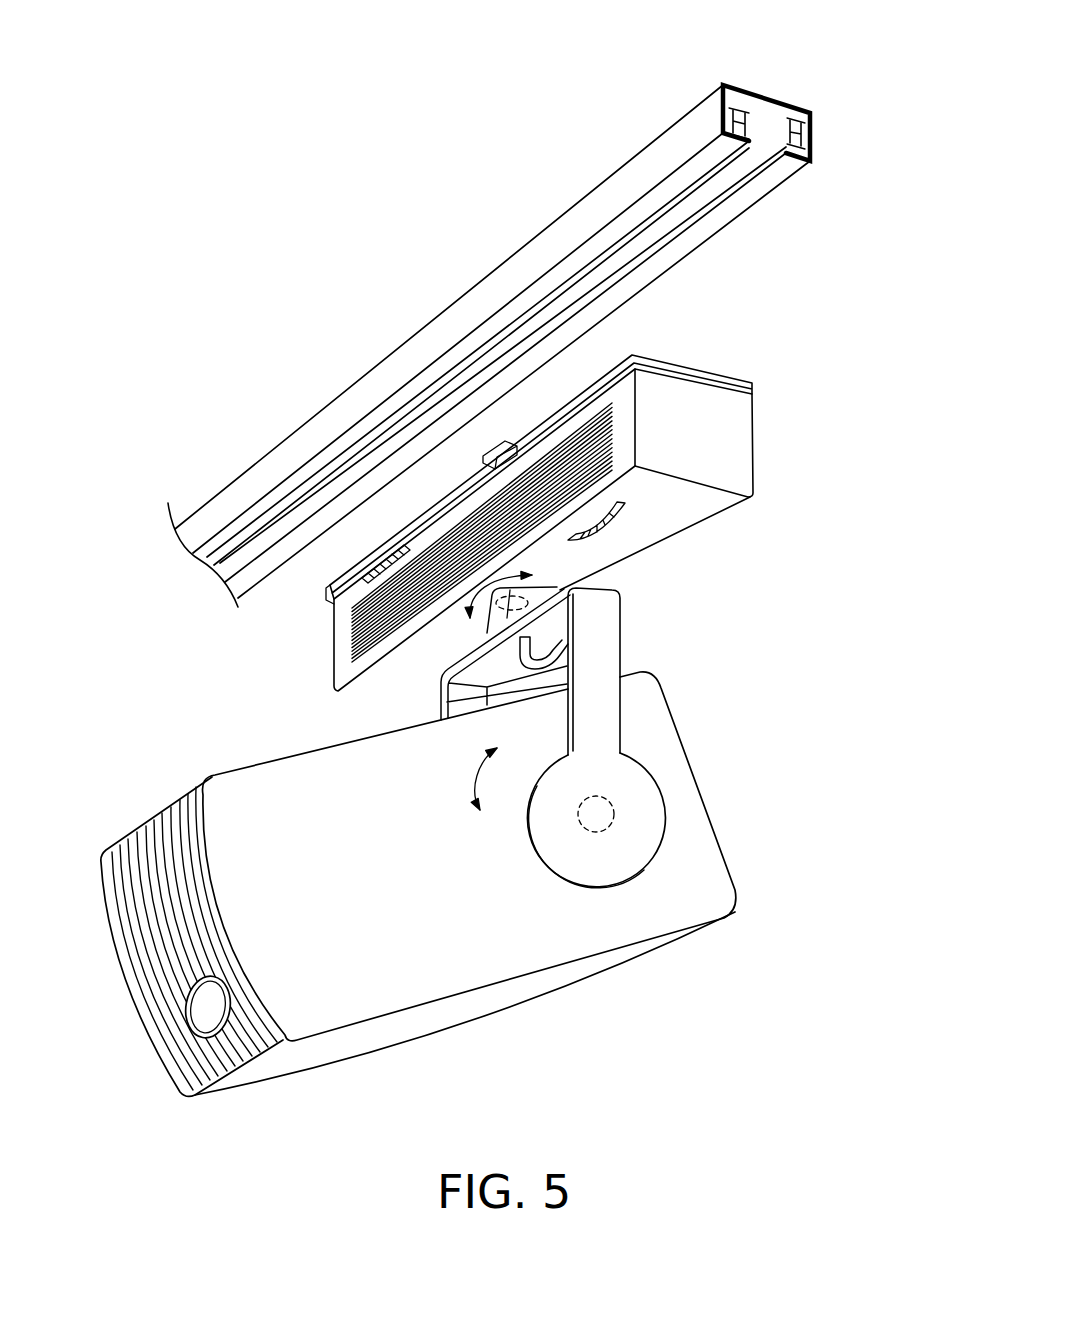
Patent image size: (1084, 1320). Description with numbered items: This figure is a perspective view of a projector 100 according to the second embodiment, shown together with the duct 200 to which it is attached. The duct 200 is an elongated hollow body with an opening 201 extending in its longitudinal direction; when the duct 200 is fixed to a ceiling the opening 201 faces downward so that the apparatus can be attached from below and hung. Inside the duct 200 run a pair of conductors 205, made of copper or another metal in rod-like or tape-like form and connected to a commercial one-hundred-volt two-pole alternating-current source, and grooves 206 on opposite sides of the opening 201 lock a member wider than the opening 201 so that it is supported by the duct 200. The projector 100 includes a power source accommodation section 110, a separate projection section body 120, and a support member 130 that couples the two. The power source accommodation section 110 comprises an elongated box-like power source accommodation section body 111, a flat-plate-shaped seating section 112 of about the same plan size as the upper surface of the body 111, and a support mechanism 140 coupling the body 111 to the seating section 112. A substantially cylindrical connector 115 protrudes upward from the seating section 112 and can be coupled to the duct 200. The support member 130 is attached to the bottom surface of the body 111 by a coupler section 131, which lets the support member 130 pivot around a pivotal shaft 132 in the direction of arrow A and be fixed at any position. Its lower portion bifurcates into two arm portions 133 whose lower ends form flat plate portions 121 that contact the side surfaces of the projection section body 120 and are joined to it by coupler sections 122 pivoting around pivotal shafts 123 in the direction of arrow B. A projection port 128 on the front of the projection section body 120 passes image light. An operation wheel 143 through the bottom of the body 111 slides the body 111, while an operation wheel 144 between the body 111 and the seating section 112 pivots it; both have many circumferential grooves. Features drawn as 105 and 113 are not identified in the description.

The projector 100 is at (238, 690).
The mounting plate 105 is at (440, 702).
The power source accommodation section 110 is at (862, 328).
The power source accommodation section body 111 is at (733, 442).
The seating section 112 is at (757, 385).
The vent slits 113 is at (610, 430).
The connector 115 is at (512, 438).
The projection section body 120 is at (543, 938).
The flat plate portions 121 is at (640, 843).
The coupler sections 122 is at (612, 790).
The pivotal shafts 123 is at (616, 812).
The projection port 128 is at (203, 1008).
The support member 130 is at (620, 630).
The coupler section 131 is at (537, 583).
The pivotal shaft 132 is at (563, 588).
The arm portions 133 is at (602, 703).
The support mechanism 140 is at (328, 608).
The operation wheel 143 is at (627, 510).
The operation wheel 144 is at (362, 575).
The duct 200 is at (417, 333).
The opening 201 is at (732, 218).
The conductors 205 is at (748, 105).
The grooves 206 is at (727, 121).